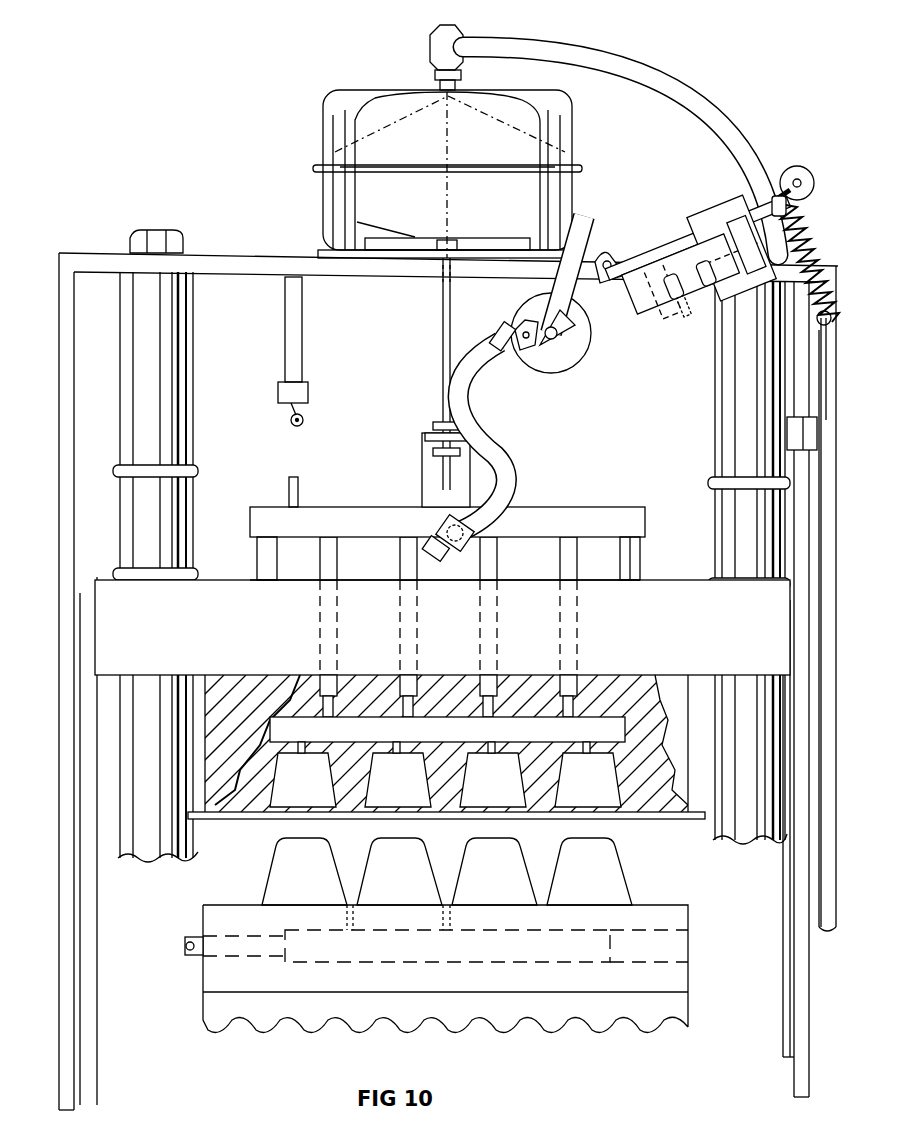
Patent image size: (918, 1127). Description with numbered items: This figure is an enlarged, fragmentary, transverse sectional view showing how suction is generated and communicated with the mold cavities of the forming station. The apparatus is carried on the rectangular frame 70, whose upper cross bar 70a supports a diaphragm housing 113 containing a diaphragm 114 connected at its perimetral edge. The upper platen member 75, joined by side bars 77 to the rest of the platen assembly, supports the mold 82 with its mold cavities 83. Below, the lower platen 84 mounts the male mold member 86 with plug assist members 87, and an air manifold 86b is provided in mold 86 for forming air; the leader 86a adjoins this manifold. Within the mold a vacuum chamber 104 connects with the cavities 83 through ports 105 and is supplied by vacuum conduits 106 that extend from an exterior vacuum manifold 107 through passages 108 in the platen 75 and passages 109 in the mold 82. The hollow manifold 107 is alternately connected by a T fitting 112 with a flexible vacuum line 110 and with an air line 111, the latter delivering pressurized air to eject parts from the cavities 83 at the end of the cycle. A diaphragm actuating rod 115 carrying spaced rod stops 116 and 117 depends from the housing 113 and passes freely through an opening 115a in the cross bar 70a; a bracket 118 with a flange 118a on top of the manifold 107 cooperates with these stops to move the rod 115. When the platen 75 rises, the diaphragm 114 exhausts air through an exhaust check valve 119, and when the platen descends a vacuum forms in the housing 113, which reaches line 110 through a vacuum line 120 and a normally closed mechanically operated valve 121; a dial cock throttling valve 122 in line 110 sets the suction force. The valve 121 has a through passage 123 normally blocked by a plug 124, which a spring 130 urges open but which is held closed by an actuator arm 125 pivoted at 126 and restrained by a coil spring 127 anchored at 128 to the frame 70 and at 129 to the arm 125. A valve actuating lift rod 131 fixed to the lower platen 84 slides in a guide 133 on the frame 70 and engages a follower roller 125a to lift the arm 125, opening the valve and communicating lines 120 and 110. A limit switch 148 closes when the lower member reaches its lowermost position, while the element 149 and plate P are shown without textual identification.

The frame 70 is at (58, 496).
The upper cross bar 70a is at (212, 262).
The upper platen member 75 is at (262, 588).
The side bars 77 is at (795, 1082).
The mold 82 is at (216, 800).
The mold cavities 83 is at (272, 800).
The lower platen 84 is at (688, 1017).
The male mold member 86 is at (355, 923).
The fitting 86a is at (188, 955).
The air manifold 86b is at (345, 960).
The plug assist members 87 is at (615, 880).
The vacuum chamber 104 is at (620, 735).
The ports 105 is at (600, 762).
The vacuum conduits 106 is at (630, 568).
The vacuum manifold 107 is at (598, 522).
The passages 108 is at (578, 652).
The passages 109 is at (580, 700).
The flexible vacuum line 110 is at (498, 490).
The air line 111 is at (418, 548).
The T fitting 112 is at (480, 533).
The diaphragm housing 113 is at (343, 100).
The diaphragm 114 is at (385, 240).
The diaphragm actuating rod 115 is at (443, 328).
The opening 115a is at (440, 270).
The rod stop 116 is at (433, 426).
The rod stop 117 is at (460, 452).
The bracket 118 is at (430, 468).
The flange 118a is at (466, 432).
The exhaust check valve 119 is at (433, 55).
The vacuum line 120 is at (598, 55).
The mechanically operated valve 121 is at (692, 325).
The dial cock throttling valve 122 is at (580, 345).
The through passage 123 is at (720, 270).
The plug 124 is at (722, 225).
The plug unblocking actuator arm 125 is at (683, 240).
The follower roller 125a is at (798, 172).
The pivot 126 is at (612, 255).
The coil spring 127 is at (805, 248).
The spring connection 128 is at (820, 312).
The spring connection 129 is at (780, 185).
The spring 130 is at (645, 305).
The valve actuating lift rod 131 is at (785, 1040).
The guide 133 is at (787, 440).
The limit switch 148 is at (308, 390).
The post 149 is at (298, 493).
The plate P is at (660, 822).